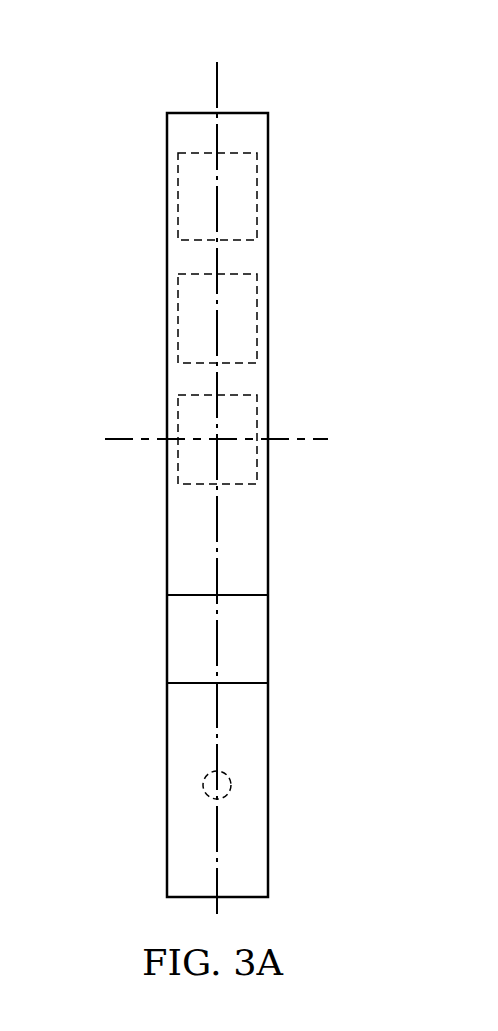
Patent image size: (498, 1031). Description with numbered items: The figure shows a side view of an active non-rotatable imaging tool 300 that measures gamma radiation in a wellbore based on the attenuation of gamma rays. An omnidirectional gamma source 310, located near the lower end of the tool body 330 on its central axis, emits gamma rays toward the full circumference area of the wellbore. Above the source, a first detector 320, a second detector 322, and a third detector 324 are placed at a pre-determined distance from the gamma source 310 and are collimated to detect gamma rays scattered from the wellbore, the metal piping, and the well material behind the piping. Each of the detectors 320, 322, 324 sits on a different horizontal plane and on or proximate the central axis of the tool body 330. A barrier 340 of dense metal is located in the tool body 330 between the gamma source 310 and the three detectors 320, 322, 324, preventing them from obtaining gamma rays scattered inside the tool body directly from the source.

The active non-rotatable imaging tool 300 is at (95, 63).
The omnidirectional gamma source 310 is at (203, 783).
The first detector 320 is at (178, 427).
The second detector 322 is at (178, 320).
The third detector 324 is at (178, 197).
The tool body 330 is at (167, 148).
The barrier 340 is at (177, 642).